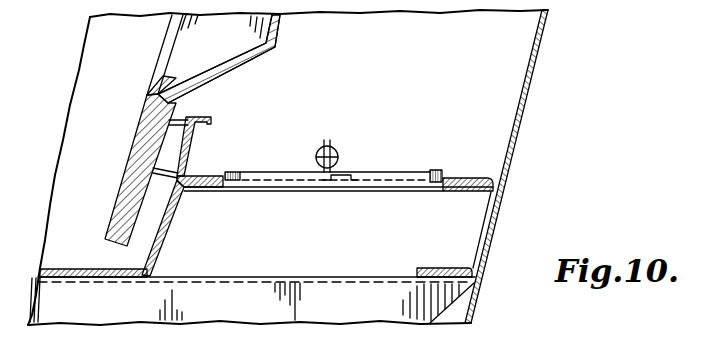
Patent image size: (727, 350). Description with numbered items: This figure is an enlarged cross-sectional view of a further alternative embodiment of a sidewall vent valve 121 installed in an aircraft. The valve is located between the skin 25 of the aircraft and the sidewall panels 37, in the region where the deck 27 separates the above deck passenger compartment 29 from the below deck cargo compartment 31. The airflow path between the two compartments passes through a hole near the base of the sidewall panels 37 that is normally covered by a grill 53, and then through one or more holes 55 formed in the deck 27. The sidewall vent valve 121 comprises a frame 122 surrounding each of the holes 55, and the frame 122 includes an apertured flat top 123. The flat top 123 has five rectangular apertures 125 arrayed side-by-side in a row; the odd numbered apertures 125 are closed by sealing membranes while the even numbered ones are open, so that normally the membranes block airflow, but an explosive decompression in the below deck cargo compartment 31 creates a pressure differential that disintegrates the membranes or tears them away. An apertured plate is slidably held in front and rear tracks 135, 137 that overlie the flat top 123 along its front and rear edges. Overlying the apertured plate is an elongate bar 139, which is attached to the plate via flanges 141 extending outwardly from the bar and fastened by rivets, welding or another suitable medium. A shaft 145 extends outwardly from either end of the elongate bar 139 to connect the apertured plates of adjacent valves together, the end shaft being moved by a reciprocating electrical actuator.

The skin 25 is at (533, 76).
The deck 27 is at (90, 268).
The above deck passenger compartment 29 is at (131, 52).
The below deck cargo compartment 31 is at (240, 311).
The sidewall panels 37 is at (127, 180).
The grill 53 is at (150, 90).
The holes 55 is at (417, 272).
The sidewall vent valve 121 is at (346, 235).
The frame 122 is at (478, 243).
The flat top 123 is at (455, 192).
The apertures 125 is at (248, 188).
The front track 135 is at (190, 172).
The rear track 137 is at (462, 172).
The elongate bar 139 is at (330, 142).
The flanges 141 is at (352, 175).
The shaft 145 is at (316, 153).